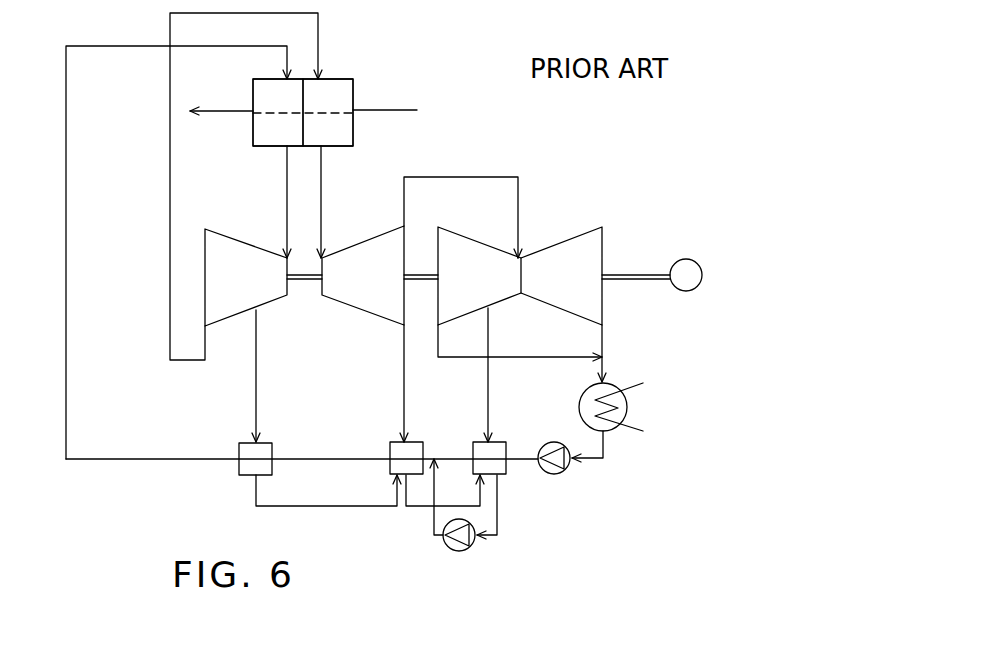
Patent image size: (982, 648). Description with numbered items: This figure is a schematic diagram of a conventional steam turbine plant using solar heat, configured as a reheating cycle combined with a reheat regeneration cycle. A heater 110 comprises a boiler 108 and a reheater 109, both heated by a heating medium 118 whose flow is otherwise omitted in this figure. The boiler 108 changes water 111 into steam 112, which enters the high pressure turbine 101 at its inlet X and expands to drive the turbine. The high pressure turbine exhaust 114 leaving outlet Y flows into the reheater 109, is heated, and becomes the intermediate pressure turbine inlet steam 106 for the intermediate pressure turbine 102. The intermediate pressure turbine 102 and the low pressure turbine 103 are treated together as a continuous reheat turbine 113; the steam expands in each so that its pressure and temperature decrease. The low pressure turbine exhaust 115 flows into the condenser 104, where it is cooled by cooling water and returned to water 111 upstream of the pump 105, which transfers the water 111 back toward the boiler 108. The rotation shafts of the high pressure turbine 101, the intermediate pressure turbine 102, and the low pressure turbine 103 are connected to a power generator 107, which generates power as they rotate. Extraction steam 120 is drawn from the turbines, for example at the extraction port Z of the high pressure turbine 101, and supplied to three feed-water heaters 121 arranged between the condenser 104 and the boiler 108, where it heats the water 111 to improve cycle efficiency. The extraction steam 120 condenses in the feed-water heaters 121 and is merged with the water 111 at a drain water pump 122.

The high pressure turbine 101 is at (232, 318).
The intermediate pressure turbine 102 is at (390, 228).
The low pressure turbine 103 is at (575, 235).
The condenser 104 is at (615, 432).
The pump 105 is at (552, 441).
The intermediate pressure turbine inlet steam 106 is at (321, 180).
The power generator 107 is at (682, 259).
The boiler 108 is at (253, 127).
The reheater 109 is at (321, 160).
The heater 110 is at (130, 133).
The water 111 is at (593, 459).
The steam 112 is at (287, 215).
The reheat turbine 113 is at (537, 227).
The high pressure turbine exhaust 114 is at (170, 310).
The low pressure turbine exhaust 115 is at (528, 356).
The heating medium 118 is at (395, 110).
The extraction steam 120 is at (256, 361).
The feed-water heater 121 is at (266, 443).
The drain water pump 122 is at (459, 551).